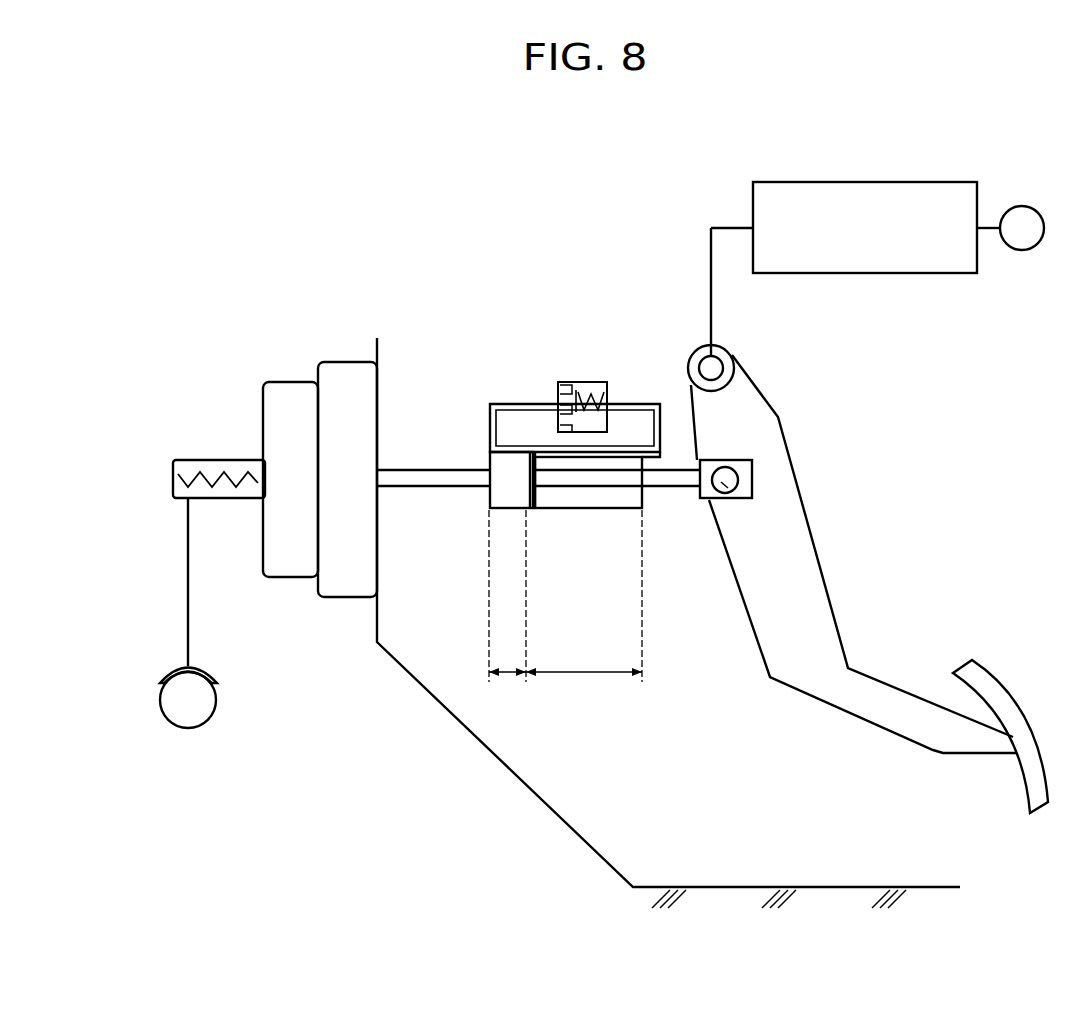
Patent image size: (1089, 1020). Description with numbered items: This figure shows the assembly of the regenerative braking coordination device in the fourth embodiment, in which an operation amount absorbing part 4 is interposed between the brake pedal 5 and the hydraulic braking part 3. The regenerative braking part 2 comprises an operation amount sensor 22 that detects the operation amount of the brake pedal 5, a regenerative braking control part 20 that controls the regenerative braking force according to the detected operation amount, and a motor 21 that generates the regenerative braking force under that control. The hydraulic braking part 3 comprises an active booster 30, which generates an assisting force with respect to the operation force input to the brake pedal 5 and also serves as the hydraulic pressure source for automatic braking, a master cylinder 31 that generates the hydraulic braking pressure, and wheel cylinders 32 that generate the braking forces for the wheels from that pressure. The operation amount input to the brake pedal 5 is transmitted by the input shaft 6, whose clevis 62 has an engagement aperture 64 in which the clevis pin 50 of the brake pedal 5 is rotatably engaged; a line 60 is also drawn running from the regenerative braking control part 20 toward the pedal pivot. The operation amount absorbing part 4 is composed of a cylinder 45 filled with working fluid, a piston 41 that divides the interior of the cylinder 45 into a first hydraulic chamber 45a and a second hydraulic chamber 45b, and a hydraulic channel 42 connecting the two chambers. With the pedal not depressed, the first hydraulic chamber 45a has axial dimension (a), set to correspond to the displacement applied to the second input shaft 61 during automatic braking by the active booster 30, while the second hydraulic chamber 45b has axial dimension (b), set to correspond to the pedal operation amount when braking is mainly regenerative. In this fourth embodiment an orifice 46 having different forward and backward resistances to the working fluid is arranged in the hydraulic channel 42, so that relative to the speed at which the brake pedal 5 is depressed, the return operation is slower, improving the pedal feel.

The regenerative braking part 2 is at (873, 160).
The hydraulic braking part 3 is at (136, 652).
The operation amount absorbing part 4 is at (558, 330).
The brake pedal 5 is at (779, 418).
The input shaft 6 is at (764, 466).
The regenerative braking control part 20 is at (778, 182).
The motor 21 is at (1021, 206).
The operation amount sensor 22 is at (724, 360).
The active booster 30 is at (348, 362).
The master cylinder 31 is at (188, 460).
The wheel cylinders 32 is at (188, 728).
The piston 41 is at (534, 492).
The hydraulic channel 42 is at (508, 404).
The cylinder 45 is at (513, 510).
The first hydraulic chamber 45a is at (618, 492).
The second hydraulic chamber 45b is at (508, 505).
The orifice 46 is at (592, 382).
The clevis pin 50 is at (722, 484).
The connecting line 60 is at (676, 470).
The second input shaft 61 is at (455, 468).
The clevis 62 is at (752, 484).
The engagement aperture 64 is at (743, 500).